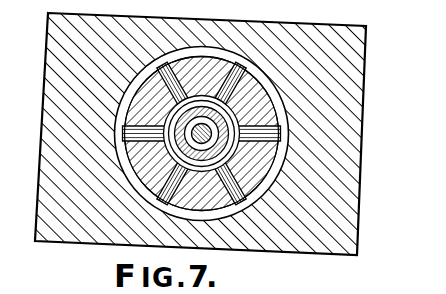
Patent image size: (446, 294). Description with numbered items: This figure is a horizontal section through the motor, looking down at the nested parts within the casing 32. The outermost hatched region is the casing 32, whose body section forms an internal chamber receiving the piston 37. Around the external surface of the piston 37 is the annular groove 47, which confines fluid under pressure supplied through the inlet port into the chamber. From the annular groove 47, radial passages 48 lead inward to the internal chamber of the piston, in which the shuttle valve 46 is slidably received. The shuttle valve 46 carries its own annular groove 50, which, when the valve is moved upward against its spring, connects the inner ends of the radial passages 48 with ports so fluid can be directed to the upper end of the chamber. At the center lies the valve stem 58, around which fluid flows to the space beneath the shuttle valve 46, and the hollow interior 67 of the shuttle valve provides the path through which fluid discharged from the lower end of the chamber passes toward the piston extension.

The casing 32 is at (351, 78).
The piston 37 is at (275, 153).
The shuttle valve 46 is at (202, 173).
The annular groove 47 is at (250, 199).
The radial passages 48 is at (272, 131).
The annular groove 50 is at (186, 138).
The valve stem 58 is at (202, 173).
The hollow interior 67 is at (144, 117).